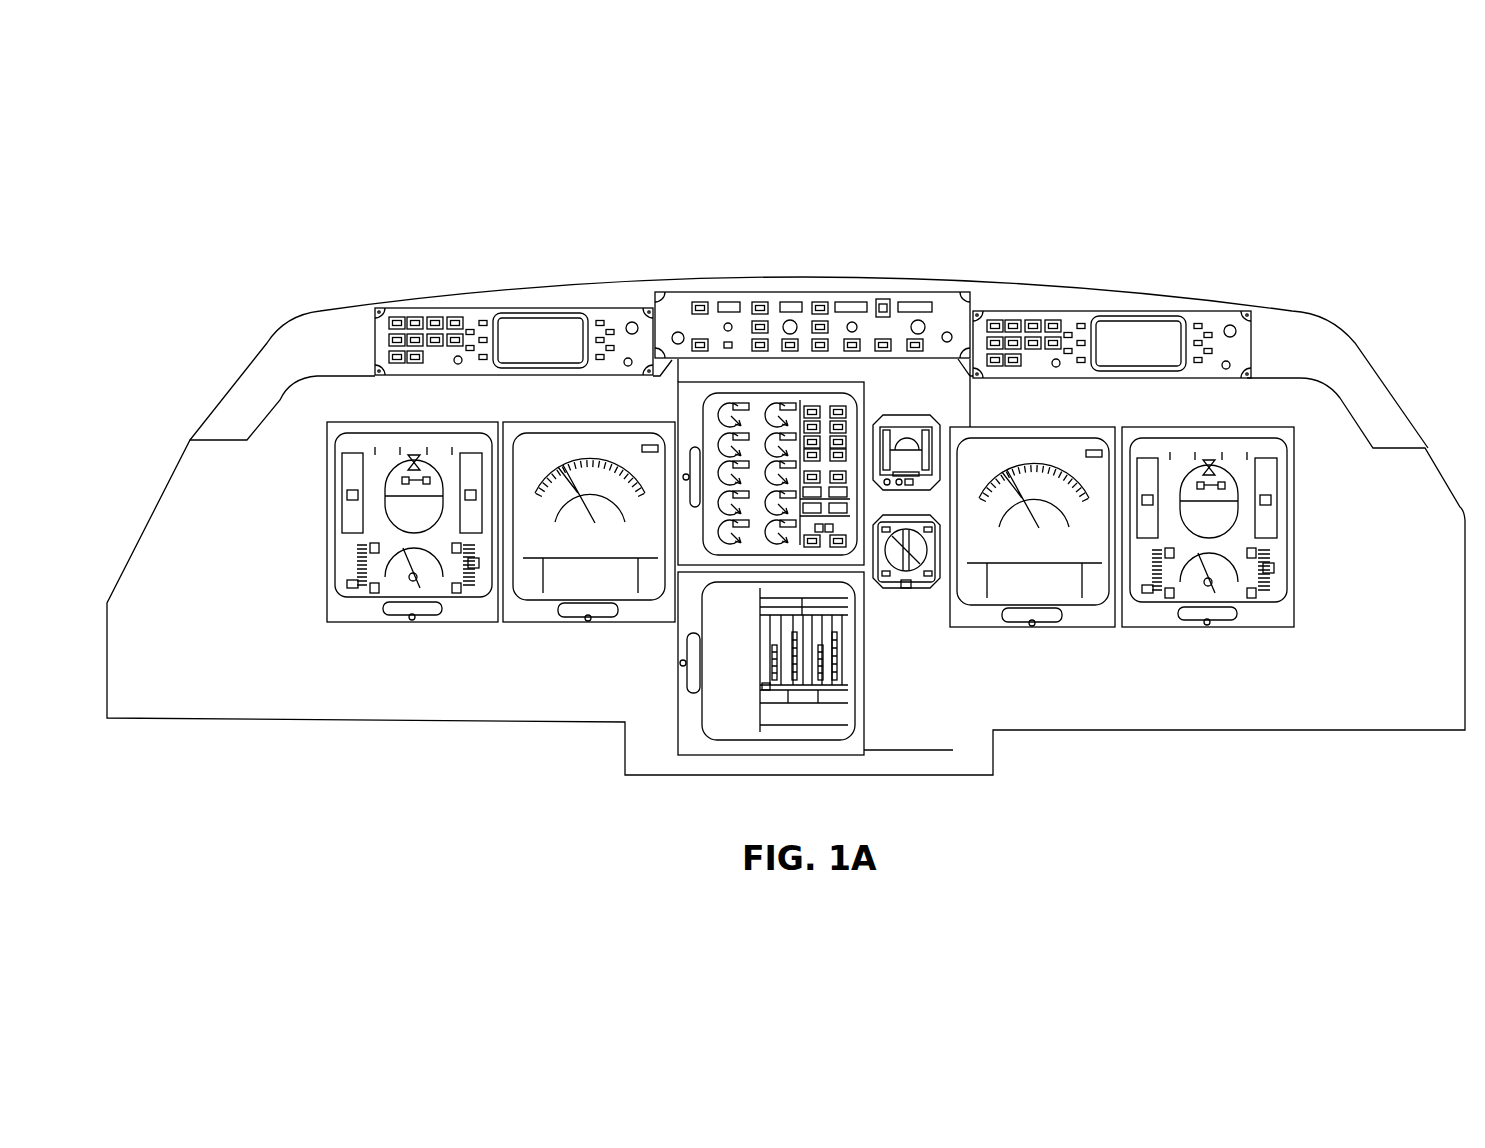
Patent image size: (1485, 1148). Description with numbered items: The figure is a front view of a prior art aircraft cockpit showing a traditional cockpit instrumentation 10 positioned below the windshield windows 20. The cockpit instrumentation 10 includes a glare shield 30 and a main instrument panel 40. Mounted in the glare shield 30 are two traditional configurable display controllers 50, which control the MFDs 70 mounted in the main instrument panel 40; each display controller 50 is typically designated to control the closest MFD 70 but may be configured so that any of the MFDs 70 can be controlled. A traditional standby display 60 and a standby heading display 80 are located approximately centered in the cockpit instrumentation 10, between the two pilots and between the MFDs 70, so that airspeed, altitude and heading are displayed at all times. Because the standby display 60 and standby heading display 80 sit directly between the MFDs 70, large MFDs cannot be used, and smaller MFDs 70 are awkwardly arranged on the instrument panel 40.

The cockpit instrumentation 10 is at (1083, 202).
The windshield windows 20 is at (593, 218).
The glare shield 30 is at (610, 295).
The main instrument panel 40 is at (155, 508).
The configurable display controller 50 is at (510, 308).
The standby display 60 is at (915, 416).
The MFD 70 is at (680, 402).
The standby heading display 80 is at (898, 592).